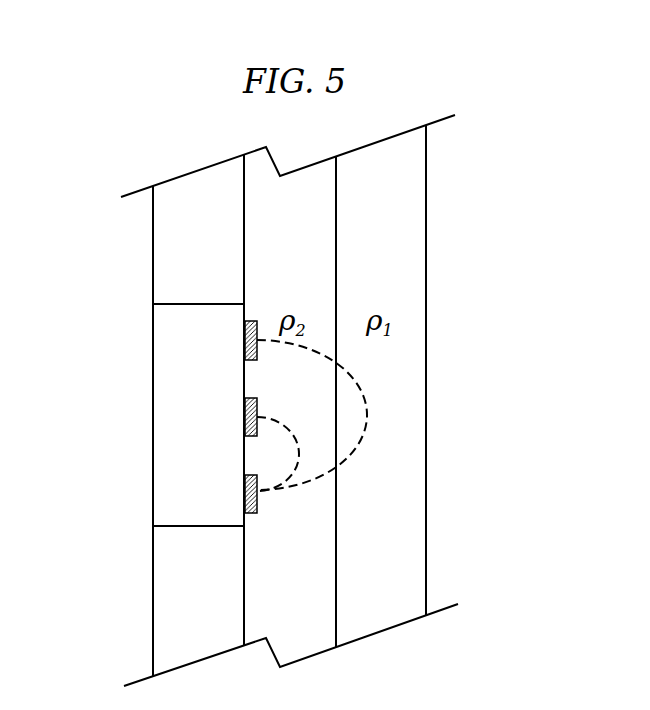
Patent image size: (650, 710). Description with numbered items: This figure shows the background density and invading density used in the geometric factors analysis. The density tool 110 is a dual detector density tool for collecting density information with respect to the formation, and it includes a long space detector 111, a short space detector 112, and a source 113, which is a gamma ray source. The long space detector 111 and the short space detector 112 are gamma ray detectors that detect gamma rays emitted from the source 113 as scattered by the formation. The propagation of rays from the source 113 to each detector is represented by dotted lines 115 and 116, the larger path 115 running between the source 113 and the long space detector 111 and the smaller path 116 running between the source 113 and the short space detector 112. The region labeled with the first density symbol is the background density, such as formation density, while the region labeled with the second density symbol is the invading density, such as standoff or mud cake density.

The density tool 110 is at (182, 303).
The long space (LS) detector 111 is at (245, 340).
The short space (SS) detector 112 is at (245, 411).
The source 113 is at (245, 489).
The dotted line 115 is at (355, 387).
The dotted line 116 is at (292, 435).